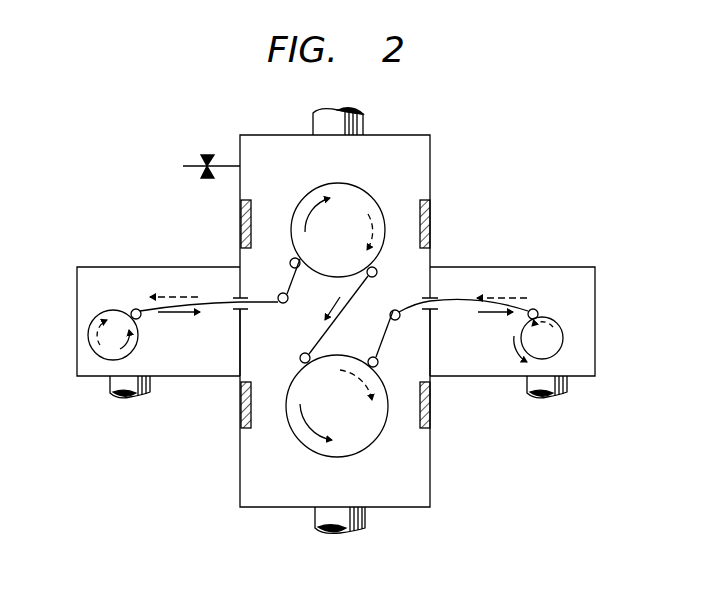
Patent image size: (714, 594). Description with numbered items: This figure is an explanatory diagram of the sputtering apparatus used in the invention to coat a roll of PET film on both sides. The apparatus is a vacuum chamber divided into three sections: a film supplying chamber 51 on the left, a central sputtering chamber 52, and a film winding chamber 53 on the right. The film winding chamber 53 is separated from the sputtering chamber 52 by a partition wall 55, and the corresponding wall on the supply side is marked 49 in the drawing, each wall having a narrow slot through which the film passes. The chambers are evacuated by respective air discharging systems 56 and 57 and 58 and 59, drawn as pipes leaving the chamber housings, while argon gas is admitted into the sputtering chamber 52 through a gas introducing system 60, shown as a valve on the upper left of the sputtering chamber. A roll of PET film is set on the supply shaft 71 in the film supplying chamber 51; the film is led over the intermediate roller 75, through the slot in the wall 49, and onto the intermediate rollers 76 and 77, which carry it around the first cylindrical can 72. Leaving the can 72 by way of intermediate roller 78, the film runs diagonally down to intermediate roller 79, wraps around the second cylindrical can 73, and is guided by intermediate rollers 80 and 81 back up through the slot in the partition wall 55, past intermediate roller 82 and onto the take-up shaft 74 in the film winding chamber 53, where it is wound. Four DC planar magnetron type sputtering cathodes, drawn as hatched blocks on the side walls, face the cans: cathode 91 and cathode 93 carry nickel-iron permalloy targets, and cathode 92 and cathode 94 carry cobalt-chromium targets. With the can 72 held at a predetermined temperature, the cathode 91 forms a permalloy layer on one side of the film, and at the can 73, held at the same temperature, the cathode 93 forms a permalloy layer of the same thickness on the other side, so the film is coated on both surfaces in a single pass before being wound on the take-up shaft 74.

The partition wall 49 is at (240, 346).
The film supplying chamber 51 is at (93, 266).
The sputtering chamber 52 is at (436, 151).
The film winding chamber 53 is at (550, 266).
The partition wall 55 is at (430, 350).
The air discharging system 56 is at (130, 398).
The air discharging system 57 is at (363, 120).
The air discharging system 58 is at (342, 534).
The air discharging system 59 is at (548, 398).
The gas introducing system 60 is at (207, 155).
The supply shaft 71 is at (138, 336).
The cylindrical can 72 is at (370, 200).
The cylindrical can 73 is at (378, 441).
The take-up shaft 74 is at (563, 340).
The intermediate roller 75 is at (134, 309).
The intermediate roller 76 is at (288, 301).
The intermediate roller 77 is at (291, 267).
The intermediate roller 78 is at (377, 273).
The intermediate roller 79 is at (300, 357).
The intermediate roller 80 is at (379, 362).
The intermediate roller 81 is at (399, 319).
The intermediate roller 82 is at (539, 313).
The DC planar magnetron type sputtering cathode 91 is at (241, 223).
The DC planar magnetron type sputtering cathode 92 is at (430, 223).
The DC planar magnetron type sputtering cathode 93 is at (241, 408).
The DC planar magnetron type sputtering cathode 94 is at (430, 408).